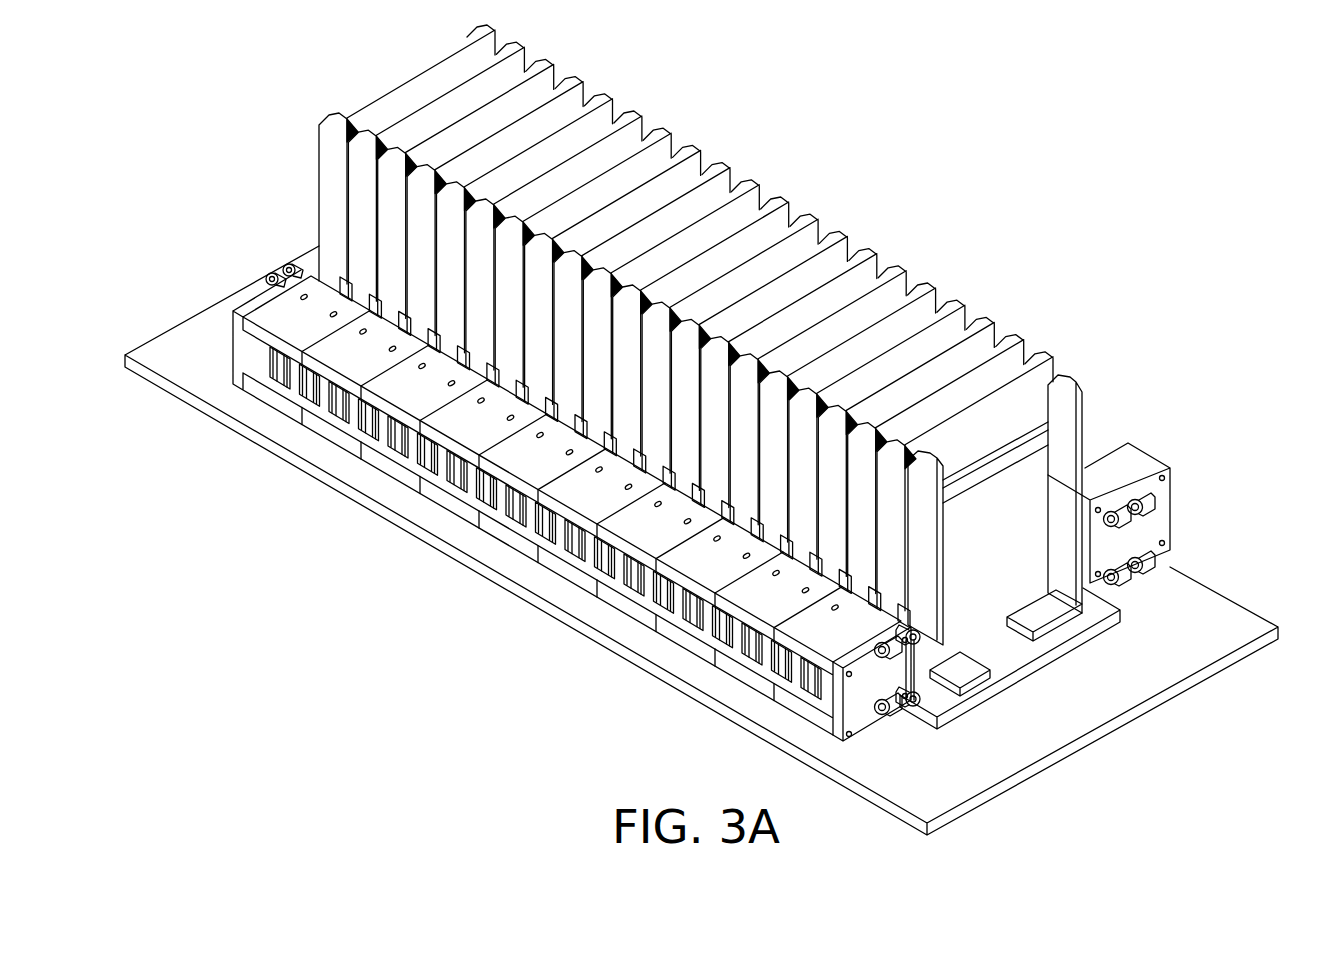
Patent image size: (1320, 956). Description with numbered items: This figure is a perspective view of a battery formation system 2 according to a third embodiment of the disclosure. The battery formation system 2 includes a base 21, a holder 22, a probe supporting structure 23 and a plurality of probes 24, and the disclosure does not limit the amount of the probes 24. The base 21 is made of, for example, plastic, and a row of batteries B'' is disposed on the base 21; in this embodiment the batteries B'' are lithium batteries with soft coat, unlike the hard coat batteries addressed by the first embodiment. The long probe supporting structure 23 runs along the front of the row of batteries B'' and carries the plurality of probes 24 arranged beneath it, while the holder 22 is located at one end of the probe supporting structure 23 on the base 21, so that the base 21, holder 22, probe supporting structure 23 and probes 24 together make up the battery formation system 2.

The battery formation system 2 is at (1244, 86).
The base 21 is at (1200, 594).
The holder 22 is at (864, 735).
The probe supporting structure 23 is at (331, 270).
The probes 24 is at (309, 393).
The batteries B'' is at (686, 326).